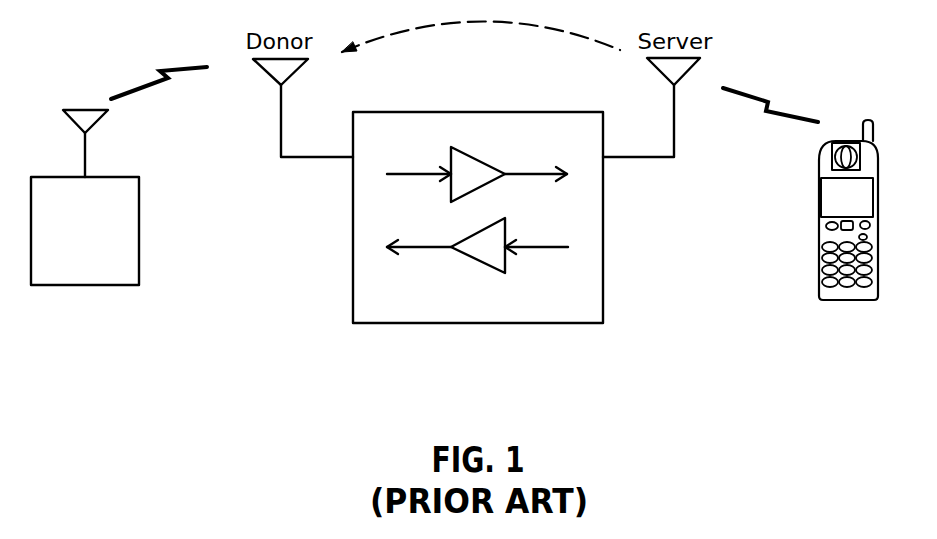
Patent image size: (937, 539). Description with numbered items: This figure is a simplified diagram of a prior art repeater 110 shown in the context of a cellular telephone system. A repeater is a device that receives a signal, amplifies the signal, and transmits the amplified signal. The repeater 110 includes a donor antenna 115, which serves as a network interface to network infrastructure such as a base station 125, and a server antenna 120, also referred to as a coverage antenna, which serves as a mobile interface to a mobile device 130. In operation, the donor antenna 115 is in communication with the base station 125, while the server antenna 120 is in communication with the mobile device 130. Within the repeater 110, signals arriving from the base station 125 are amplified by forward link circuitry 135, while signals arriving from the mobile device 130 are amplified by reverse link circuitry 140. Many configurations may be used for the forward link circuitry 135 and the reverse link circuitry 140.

The repeater 110 is at (478, 235).
The donor antenna 115 is at (294, 72).
The server antenna 120 is at (657, 68).
The base station 125 is at (102, 285).
The mobile device 130 is at (848, 300).
The forward link circuitry 135 is at (477, 158).
The reverse link circuitry 140 is at (482, 262).